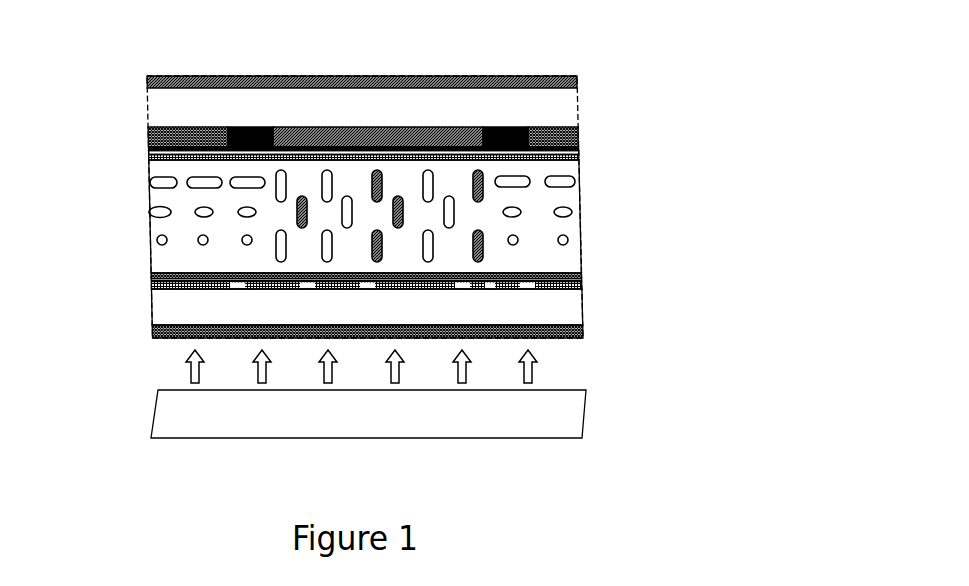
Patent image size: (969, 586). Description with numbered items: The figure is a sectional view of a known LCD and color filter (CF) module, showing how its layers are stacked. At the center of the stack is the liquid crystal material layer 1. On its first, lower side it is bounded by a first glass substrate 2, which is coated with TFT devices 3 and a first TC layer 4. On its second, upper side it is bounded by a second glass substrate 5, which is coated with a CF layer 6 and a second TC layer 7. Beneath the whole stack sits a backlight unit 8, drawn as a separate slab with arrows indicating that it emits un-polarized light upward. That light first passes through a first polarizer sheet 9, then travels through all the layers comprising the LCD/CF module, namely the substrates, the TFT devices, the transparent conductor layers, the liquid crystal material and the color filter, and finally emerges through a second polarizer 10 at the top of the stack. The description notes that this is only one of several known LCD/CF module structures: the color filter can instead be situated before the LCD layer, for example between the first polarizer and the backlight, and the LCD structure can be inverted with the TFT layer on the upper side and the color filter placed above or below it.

The liquid crystal material layer 1 is at (185, 222).
The first glass substrate 2 is at (180, 305).
The TFT devices 3 is at (588, 286).
The first TC layer 4 is at (520, 278).
The second glass substrate 5 is at (170, 112).
The CF layer 6 is at (316, 136).
The second TC layer 7 is at (583, 152).
The backlight unit 8 is at (182, 410).
The first polarizer sheet 9 is at (588, 335).
The second polarizer 10 is at (585, 80).